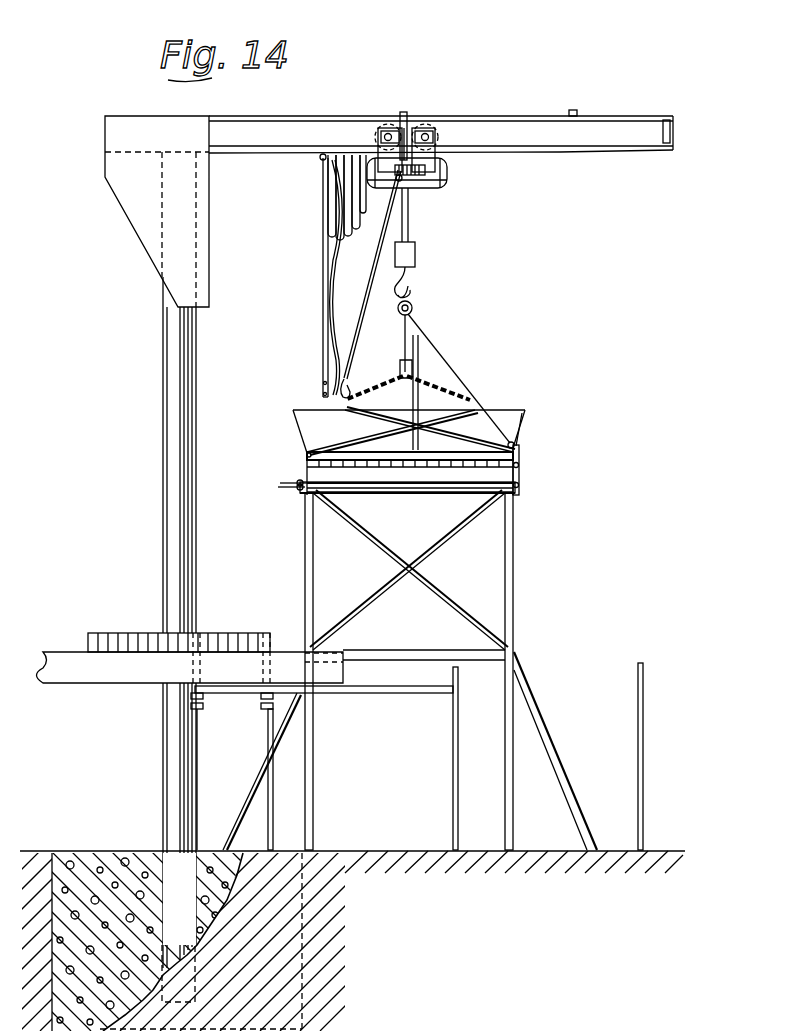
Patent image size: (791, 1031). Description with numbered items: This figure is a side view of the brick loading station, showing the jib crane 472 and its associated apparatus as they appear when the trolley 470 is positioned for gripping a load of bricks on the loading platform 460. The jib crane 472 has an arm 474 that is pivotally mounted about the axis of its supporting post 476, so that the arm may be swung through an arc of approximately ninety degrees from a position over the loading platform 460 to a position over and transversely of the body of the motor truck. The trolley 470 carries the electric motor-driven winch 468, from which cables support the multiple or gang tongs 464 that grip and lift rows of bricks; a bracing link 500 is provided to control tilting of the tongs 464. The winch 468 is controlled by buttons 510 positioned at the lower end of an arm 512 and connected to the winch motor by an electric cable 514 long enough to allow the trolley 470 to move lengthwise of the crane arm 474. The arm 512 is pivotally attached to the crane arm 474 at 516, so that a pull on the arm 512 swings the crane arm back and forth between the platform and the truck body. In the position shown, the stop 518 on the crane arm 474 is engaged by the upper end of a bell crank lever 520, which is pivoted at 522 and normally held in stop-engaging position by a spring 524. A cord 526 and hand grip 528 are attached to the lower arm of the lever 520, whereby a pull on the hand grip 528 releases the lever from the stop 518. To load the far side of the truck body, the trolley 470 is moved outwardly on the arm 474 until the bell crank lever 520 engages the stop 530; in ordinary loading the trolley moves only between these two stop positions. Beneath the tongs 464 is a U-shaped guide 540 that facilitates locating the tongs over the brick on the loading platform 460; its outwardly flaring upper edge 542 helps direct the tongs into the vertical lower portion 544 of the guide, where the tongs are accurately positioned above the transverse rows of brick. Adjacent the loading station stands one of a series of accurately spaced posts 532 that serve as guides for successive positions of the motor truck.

The loading platform 460 is at (380, 496).
The tongs 464 is at (420, 365).
The electric motor-driven winch 468 is at (447, 172).
The trolley 470 is at (427, 158).
The jib crane 472 is at (133, 212).
The arm 474 is at (627, 123).
The supporting post 476 is at (163, 452).
The bracing link 500 is at (462, 375).
The buttons 510 is at (322, 395).
The arm 512 is at (322, 308).
The electric cable 514 is at (330, 260).
The pivot 516 is at (322, 158).
The stop 518 is at (403, 112).
The bell crank lever 520 is at (407, 135).
The pivot 522 is at (402, 181).
The spring 524 is at (420, 176).
The cord 526 is at (385, 250).
The hand grip 528 is at (348, 390).
The stop 530 is at (574, 110).
The posts 532 is at (645, 678).
The U-shaped guide 540 is at (527, 443).
The outwardly flaring upper edge 542 is at (526, 412).
The vertical lower portion 544 is at (520, 472).